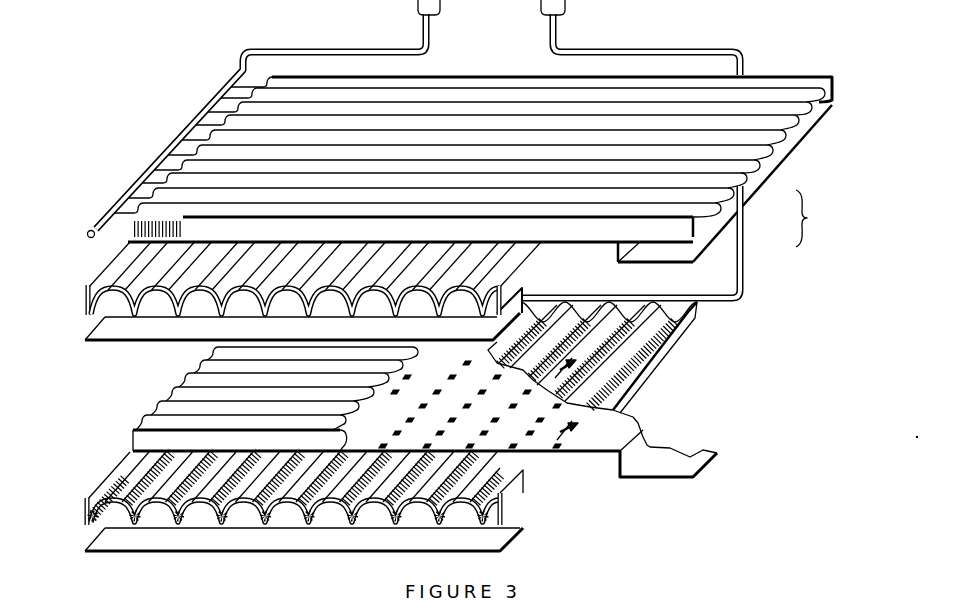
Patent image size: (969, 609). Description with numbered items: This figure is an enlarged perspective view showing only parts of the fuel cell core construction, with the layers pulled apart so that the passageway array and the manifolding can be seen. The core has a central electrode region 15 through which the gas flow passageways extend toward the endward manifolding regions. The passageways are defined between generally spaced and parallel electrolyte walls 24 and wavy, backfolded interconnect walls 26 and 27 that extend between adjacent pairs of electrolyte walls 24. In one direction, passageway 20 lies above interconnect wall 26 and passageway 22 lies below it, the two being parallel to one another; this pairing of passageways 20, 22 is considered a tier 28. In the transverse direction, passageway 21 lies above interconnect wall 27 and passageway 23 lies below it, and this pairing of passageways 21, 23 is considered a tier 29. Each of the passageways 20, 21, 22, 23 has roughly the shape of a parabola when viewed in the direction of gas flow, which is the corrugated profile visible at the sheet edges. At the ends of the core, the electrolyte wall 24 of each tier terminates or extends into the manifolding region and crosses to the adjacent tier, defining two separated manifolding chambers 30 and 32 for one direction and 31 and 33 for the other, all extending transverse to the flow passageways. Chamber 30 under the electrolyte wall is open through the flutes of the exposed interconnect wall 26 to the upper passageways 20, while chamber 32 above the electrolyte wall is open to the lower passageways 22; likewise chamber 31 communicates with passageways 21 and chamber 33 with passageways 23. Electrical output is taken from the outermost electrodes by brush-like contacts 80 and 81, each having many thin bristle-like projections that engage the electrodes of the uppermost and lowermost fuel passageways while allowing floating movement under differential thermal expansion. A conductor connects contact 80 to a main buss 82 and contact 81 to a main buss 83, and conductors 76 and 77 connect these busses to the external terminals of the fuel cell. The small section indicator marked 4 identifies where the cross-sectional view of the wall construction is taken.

The central electrode region 15 is at (460, 138).
The tier 29 is at (465, 269).
The passageway 21 is at (720, 183).
The interconnect wall 27 is at (725, 200).
The passageway 23 is at (722, 212).
The manifolding chamber 30 is at (537, 289).
The manifolding chamber 31 is at (602, 252).
The manifolding chamber 33 is at (650, 248).
The manifolding chamber 32 is at (518, 307).
The tier 28 is at (384, 425).
The passageway 20 is at (172, 500).
The interconnect wall 26 is at (180, 508).
The passageway 22 is at (203, 518).
The contact 81 is at (357, 523).
The contact 80 is at (128, 233).
The electrolyte wall 24 is at (527, 470).
The section line 4 is at (574, 389).
The main buss 82 is at (158, 158).
The conductor 76 is at (298, 48).
The conductor 77 is at (660, 49).
The main buss 83 is at (708, 302).